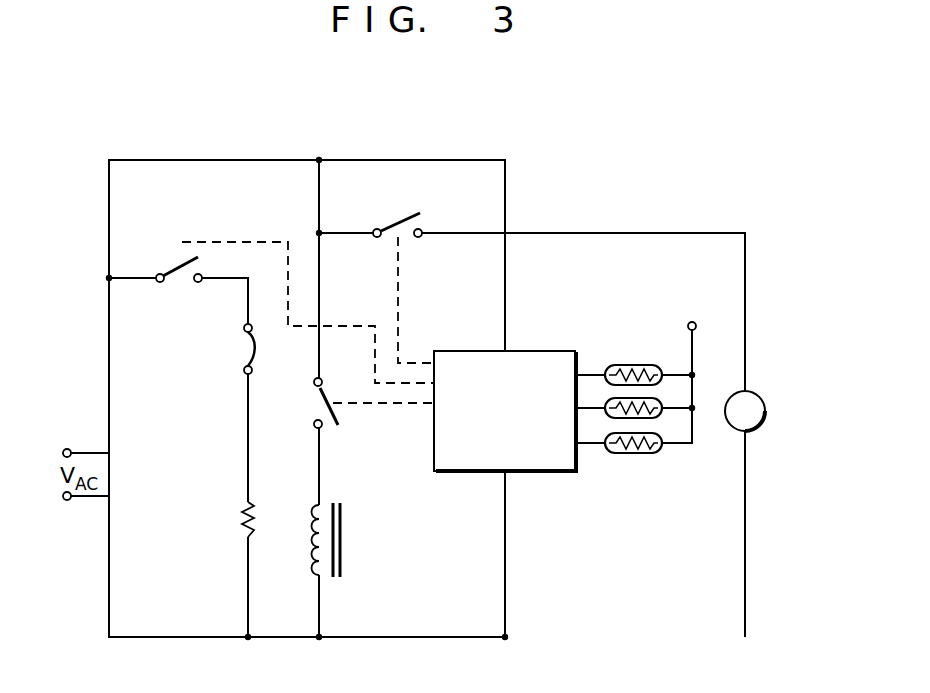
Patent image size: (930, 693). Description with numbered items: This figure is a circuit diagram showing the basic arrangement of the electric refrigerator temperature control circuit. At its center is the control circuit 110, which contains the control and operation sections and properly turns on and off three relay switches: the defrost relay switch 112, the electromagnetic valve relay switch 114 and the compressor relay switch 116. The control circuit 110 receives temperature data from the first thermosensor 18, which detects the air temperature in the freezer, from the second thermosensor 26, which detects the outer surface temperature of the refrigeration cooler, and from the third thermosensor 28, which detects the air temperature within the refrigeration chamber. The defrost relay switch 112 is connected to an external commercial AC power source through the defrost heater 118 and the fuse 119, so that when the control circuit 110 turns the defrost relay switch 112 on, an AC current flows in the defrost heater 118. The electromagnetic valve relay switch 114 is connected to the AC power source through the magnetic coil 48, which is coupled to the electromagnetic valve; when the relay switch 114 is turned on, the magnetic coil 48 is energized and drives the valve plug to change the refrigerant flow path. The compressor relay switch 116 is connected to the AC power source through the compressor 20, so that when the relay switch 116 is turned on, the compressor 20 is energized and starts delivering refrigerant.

The defrost relay switch 112 is at (178, 287).
The fuse 119 is at (240, 355).
The defrost heater 118 is at (235, 522).
The electromagnetic valve relay switch 114 is at (315, 402).
The compressor relay switch 116 is at (398, 223).
The magnetic coil 48 is at (347, 540).
The control circuit 110 is at (543, 357).
The first thermosensor 18 is at (622, 364).
The second thermosensor 26 is at (658, 401).
The third thermosensor 28 is at (625, 454).
The compressor 20 is at (737, 424).